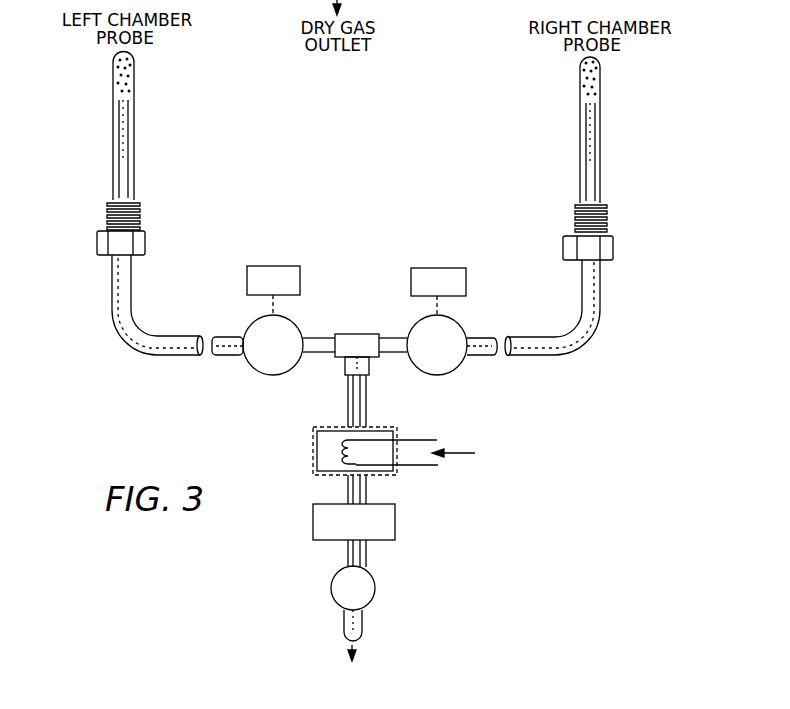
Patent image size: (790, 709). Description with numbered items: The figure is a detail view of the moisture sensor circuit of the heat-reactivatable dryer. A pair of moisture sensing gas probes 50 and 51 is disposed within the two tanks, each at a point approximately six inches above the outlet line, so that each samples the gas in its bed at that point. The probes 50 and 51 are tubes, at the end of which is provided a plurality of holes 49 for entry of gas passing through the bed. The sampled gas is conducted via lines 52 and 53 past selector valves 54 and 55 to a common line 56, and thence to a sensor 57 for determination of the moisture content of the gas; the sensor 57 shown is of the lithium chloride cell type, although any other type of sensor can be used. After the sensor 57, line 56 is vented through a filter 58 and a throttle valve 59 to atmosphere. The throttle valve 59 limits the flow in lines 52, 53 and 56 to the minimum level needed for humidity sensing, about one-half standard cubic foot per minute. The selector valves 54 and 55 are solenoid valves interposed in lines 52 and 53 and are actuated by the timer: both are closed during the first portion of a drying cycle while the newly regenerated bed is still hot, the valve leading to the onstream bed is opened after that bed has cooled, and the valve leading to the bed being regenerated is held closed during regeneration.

The holes 49 is at (128, 70).
The moisture sensing gas probe 50 is at (130, 126).
The moisture sensing gas probe 51 is at (595, 148).
The line 52 is at (133, 318).
The line 53 is at (580, 318).
The selector valve 54 is at (258, 372).
The selector valve 55 is at (445, 374).
The line 56 is at (366, 402).
The sensor 57 is at (313, 460).
The filter 58 is at (395, 528).
The throttle valve 59 is at (331, 589).